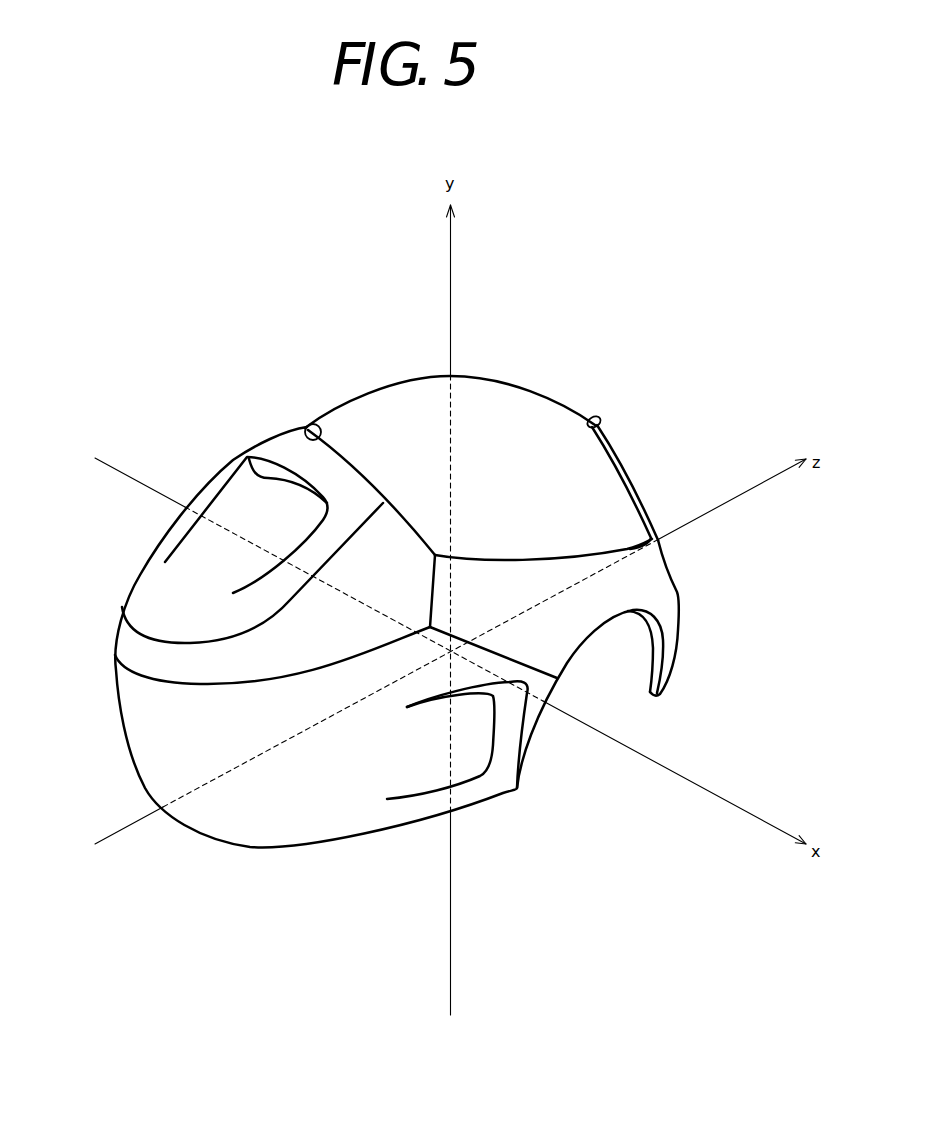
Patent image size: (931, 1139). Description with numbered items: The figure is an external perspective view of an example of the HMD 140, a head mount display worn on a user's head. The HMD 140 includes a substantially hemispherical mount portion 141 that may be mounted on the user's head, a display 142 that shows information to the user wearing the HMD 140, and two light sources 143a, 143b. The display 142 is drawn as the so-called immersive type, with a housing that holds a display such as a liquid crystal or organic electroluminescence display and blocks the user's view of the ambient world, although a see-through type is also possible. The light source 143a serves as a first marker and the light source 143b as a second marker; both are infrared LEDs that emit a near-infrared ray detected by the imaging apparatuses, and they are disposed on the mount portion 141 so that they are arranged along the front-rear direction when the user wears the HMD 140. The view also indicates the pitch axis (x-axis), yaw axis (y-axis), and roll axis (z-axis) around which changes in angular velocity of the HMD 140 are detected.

The HMD 140 is at (608, 238).
The mount portion 141 is at (488, 407).
The display 142 is at (150, 730).
The light source 143a is at (307, 423).
The light source 143b is at (597, 417).